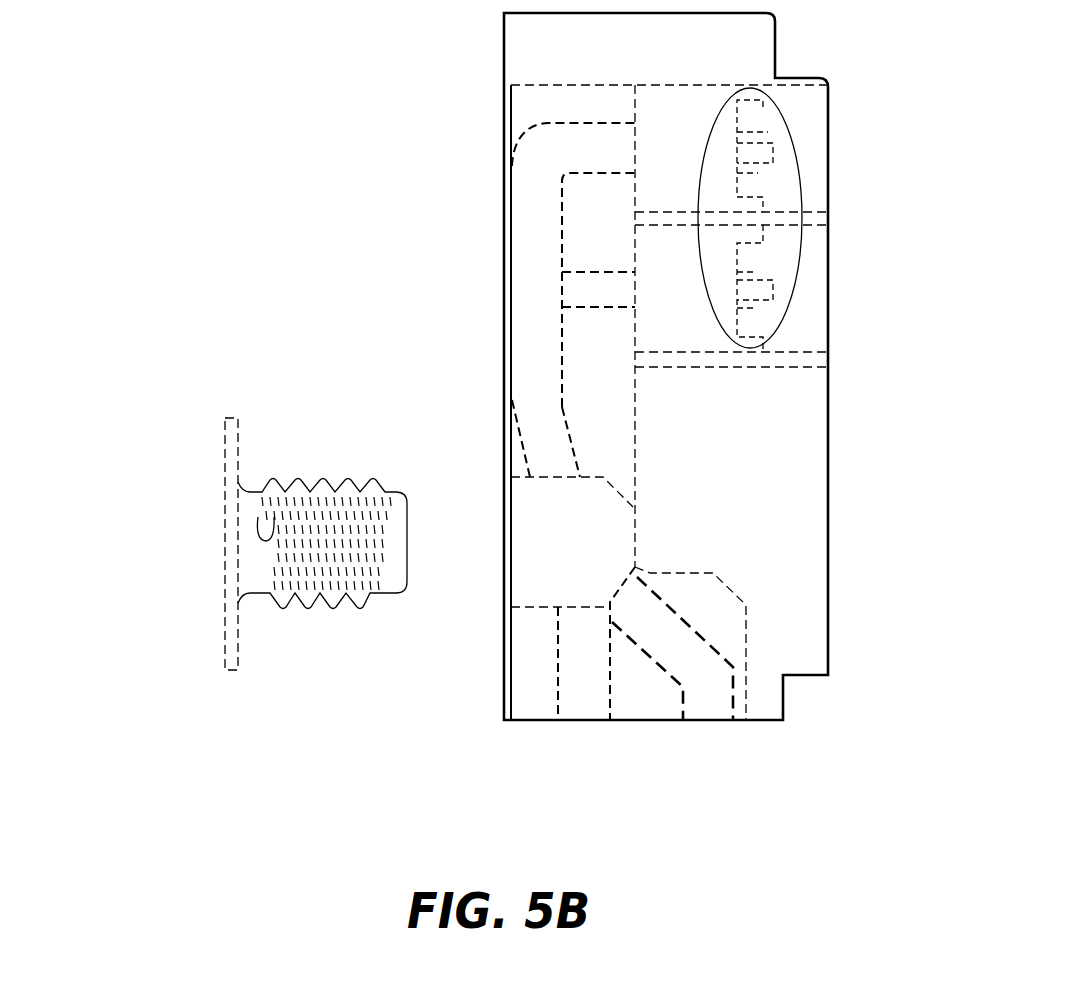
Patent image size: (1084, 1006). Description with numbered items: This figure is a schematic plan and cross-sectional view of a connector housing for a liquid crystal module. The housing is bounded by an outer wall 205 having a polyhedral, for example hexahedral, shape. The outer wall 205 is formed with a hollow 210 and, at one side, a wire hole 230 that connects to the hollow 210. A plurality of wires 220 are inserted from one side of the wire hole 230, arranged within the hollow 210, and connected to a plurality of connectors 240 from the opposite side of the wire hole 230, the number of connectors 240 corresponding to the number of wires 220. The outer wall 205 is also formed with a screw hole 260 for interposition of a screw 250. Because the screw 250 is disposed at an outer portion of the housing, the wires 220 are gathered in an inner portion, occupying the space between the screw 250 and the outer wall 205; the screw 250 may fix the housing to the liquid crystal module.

The outer wall 205 is at (505, 122).
The hollow 210 is at (600, 335).
The wires 220 is at (645, 648).
The wire hole 230 is at (678, 732).
The connectors 240 is at (810, 173).
The screw 250 is at (190, 537).
The screw hole 260 is at (527, 512).